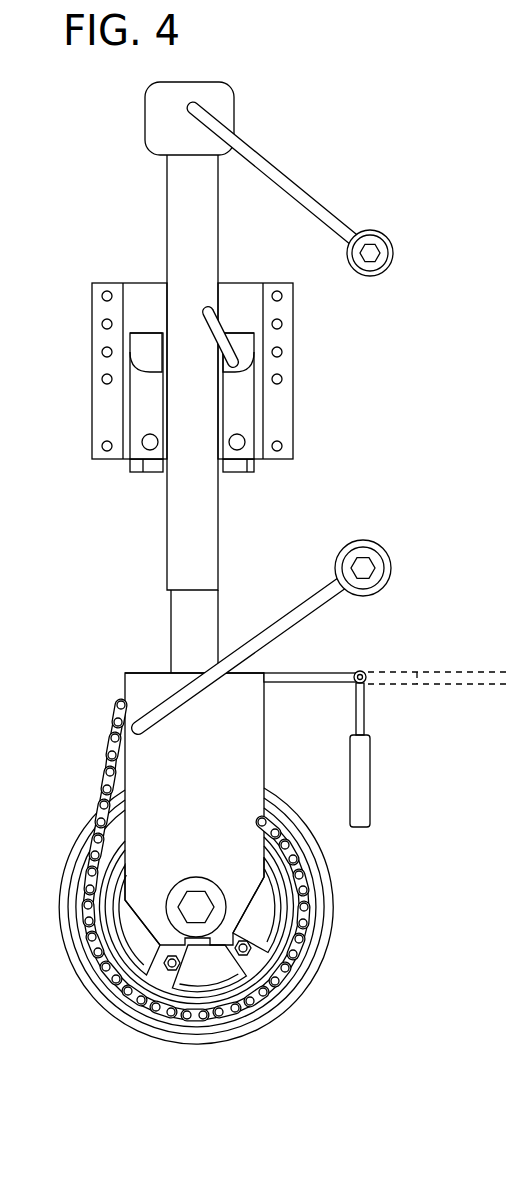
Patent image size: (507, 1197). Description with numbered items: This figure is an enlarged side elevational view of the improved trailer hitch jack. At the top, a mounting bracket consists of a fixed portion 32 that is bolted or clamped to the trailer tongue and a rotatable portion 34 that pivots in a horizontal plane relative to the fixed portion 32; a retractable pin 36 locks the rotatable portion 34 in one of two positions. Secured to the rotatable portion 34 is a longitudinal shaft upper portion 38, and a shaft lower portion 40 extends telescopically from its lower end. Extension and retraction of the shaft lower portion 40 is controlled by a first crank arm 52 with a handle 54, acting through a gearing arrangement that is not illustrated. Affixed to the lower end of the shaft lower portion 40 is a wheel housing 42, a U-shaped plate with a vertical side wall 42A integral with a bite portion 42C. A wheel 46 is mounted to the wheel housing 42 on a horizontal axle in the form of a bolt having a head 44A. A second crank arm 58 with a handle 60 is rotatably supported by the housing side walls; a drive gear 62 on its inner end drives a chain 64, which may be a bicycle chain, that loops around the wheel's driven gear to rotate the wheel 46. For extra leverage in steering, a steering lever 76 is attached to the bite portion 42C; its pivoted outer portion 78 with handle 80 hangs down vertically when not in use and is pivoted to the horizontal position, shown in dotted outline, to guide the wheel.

The fixed portion 32 is at (288, 393).
The rotatable portion 34 is at (147, 405).
The retractable pin 36 is at (227, 325).
The shaft upper portion 38 is at (182, 195).
The shaft lower portion 40 is at (180, 608).
The wheel housing 42 is at (118, 652).
The side wall 42A is at (232, 740).
The bite portion 42C is at (318, 670).
The head 44A is at (207, 902).
The wheel 46 is at (288, 1007).
The first crank arm 52 is at (268, 167).
The handle 54 is at (389, 231).
The second crank arm 58 is at (293, 617).
The handle 60 is at (370, 540).
The drive gear 62 is at (97, 812).
The chain 64 is at (100, 760).
The steering lever 76 is at (320, 672).
The pivoted outer portion 78 is at (365, 707).
The handle 80 is at (365, 797).